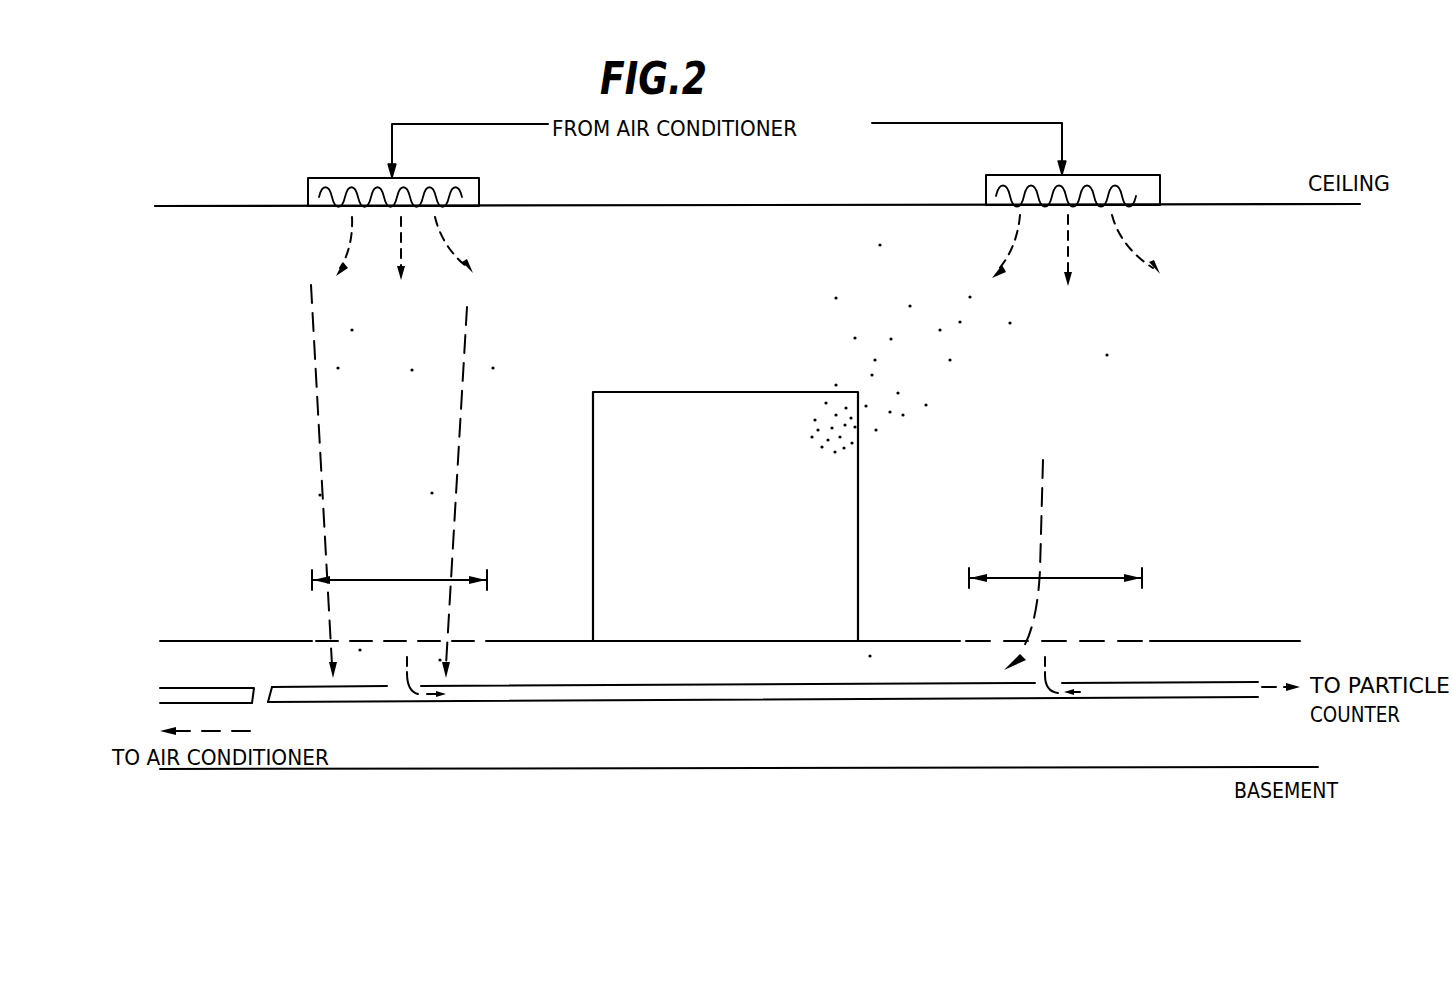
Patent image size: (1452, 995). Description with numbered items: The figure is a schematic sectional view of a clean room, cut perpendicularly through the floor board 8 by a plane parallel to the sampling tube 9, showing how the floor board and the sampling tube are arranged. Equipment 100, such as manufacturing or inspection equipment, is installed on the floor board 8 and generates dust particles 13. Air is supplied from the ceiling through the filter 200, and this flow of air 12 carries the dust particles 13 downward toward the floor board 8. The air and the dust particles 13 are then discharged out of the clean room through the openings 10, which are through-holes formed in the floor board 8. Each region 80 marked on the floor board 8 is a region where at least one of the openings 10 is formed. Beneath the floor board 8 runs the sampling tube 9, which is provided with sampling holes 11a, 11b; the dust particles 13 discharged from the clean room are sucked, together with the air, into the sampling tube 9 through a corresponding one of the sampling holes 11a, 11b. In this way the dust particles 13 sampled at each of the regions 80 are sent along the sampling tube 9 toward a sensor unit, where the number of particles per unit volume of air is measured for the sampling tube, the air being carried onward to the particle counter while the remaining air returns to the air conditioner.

The filter 200 is at (479, 186).
The flow of air 12 is at (452, 250).
The dust particles 13 is at (372, 432).
The equipment 100 is at (858, 468).
The floor board 8 is at (180, 641).
The region 80 is at (418, 578).
The opening 10 is at (397, 641).
The sampling tube 9 is at (806, 700).
The sampling hole 11a is at (721, 738).
The sampling hole 11b is at (400, 698).